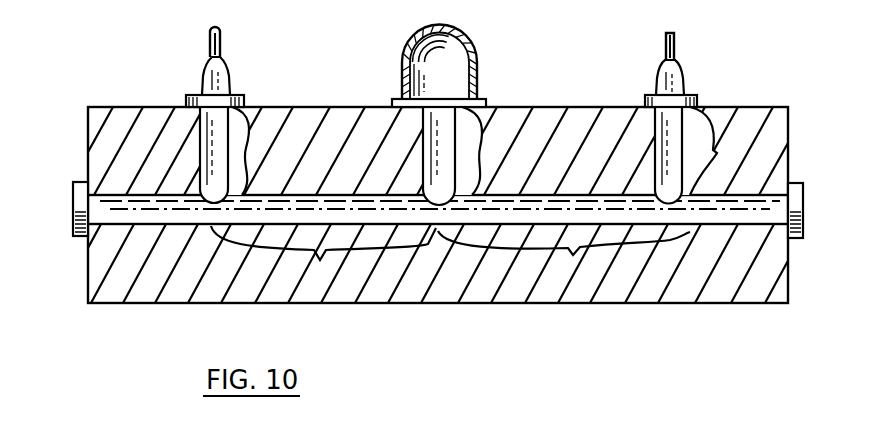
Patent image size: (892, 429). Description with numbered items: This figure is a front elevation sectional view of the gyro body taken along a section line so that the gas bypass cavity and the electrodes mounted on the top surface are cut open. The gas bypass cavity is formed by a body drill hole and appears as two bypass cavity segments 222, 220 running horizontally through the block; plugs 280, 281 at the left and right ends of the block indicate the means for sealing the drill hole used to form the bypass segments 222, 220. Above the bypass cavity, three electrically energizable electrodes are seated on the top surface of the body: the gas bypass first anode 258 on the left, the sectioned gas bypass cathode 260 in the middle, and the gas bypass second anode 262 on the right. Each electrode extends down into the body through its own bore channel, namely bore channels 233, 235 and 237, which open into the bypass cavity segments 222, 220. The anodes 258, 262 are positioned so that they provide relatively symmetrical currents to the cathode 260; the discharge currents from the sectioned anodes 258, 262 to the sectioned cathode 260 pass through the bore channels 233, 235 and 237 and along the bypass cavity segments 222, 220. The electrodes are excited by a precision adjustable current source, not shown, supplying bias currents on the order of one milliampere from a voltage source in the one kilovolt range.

The bypass cavity segment 220 is at (564, 253).
The bypass cavity segment 222 is at (323, 256).
The bore channel 233 is at (249, 150).
The bore channel 235 is at (483, 150).
The bore channel 237 is at (717, 153).
The gas bypass first anode 258 is at (223, 68).
The gas bypass cathode 260 is at (460, 31).
The gas bypass second anode 262 is at (671, 78).
The plug 280 is at (73, 203).
The plug 281 is at (803, 202).